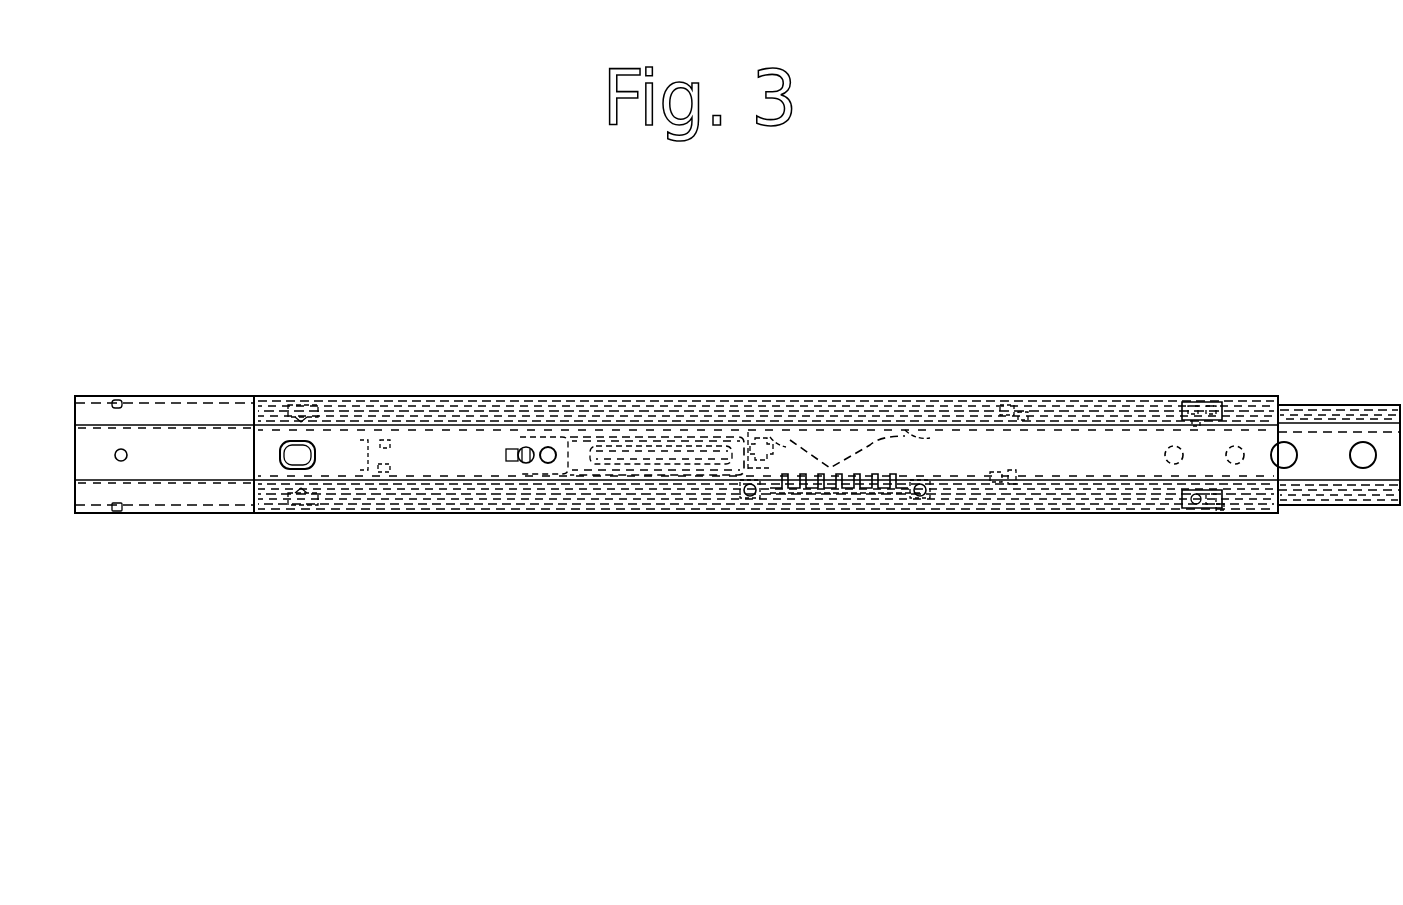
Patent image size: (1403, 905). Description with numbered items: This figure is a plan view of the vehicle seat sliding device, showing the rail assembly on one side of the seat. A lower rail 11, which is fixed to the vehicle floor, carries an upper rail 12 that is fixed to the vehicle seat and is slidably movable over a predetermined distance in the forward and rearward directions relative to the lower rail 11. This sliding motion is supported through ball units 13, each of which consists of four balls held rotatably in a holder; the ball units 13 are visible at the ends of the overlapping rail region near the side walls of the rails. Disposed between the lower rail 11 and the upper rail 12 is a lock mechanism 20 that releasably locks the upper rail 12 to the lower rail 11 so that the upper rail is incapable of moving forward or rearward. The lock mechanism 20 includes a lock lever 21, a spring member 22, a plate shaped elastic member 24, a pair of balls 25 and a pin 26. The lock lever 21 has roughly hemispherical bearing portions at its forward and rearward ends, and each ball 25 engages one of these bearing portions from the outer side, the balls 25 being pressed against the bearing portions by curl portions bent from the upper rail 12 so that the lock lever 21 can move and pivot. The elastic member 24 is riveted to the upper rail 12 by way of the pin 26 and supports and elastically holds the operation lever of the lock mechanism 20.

The lower rail 11 is at (212, 500).
The upper rail 12 is at (468, 430).
The ball unit 13 is at (302, 400).
The lock mechanism 20 is at (758, 450).
The lock lever 21 is at (870, 490).
The spring member 22 is at (825, 458).
The plate shaped elastic member 24 is at (575, 460).
The ball 25 is at (750, 497).
The pin 26 is at (552, 445).